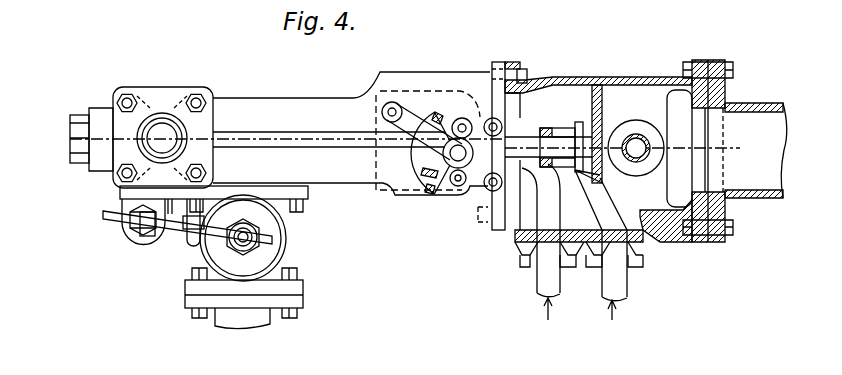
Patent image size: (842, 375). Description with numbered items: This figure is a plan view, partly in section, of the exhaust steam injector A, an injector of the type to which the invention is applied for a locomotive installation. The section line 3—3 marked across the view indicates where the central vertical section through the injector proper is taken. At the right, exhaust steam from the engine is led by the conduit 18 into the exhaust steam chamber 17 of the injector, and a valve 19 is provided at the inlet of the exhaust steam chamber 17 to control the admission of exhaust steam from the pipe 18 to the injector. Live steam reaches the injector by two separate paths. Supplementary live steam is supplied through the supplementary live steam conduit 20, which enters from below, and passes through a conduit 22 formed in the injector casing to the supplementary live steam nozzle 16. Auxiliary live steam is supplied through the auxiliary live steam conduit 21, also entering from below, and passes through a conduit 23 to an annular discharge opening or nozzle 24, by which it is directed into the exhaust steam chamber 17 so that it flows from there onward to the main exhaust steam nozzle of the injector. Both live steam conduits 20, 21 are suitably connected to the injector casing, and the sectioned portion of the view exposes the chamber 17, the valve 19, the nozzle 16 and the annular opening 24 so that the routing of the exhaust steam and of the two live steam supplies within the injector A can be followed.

The section line 3— 3 is at (68, 135).
The supplementary live steam nozzle 16 is at (516, 133).
The exhaust steam chamber 17 is at (548, 95).
The exhaust steam conduit 18 is at (735, 151).
The valve 19 is at (634, 130).
The supplementary live steam conduit 20 is at (620, 281).
The auxiliary live steam conduit 21 is at (543, 279).
The conduit 22 is at (588, 193).
The conduit 23 is at (552, 193).
The annular discharge opening 24 is at (559, 130).
The exhaust steam injector A is at (588, 78).